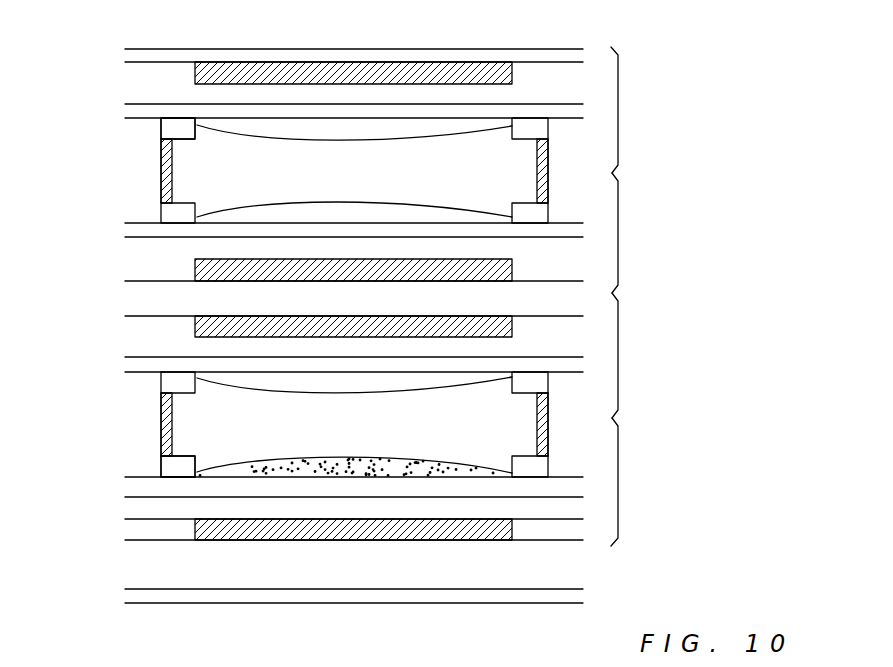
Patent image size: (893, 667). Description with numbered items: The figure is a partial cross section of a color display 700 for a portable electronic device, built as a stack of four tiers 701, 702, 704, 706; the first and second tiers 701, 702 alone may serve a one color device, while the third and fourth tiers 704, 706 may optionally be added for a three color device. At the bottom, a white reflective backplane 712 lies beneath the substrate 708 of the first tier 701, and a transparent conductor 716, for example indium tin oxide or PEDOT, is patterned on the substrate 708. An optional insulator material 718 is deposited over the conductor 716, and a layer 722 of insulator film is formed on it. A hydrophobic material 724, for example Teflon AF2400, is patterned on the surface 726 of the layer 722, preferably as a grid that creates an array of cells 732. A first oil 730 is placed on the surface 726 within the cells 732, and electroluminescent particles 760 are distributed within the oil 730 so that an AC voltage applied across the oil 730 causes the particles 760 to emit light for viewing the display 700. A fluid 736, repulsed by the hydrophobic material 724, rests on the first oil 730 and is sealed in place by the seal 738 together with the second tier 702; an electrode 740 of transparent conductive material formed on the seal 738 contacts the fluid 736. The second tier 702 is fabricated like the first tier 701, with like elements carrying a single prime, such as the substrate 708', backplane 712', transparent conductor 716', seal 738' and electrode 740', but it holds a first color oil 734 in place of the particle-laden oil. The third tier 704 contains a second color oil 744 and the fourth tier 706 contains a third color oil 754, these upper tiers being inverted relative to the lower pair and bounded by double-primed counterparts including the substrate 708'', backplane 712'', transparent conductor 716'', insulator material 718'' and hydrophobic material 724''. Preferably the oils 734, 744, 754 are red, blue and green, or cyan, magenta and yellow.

The color display 700 is at (710, 583).
The first tier 701 is at (642, 482).
The second tier 702 is at (643, 355).
The third tier 704 is at (643, 233).
The fourth tier 706 is at (642, 110).
The substrate 708 is at (320, 555).
The substrate of second tier 708' is at (320, 294).
The substrate of third tier 708'' is at (337, 35).
The white reflective backplane 712 is at (320, 476).
The backplane of second tier 712' is at (316, 221).
The backplane of third tier 712'' is at (320, 102).
The transparent conductor 716 is at (327, 428).
The transparent conductor of second tier 716' is at (313, 263).
The transparent conductor of third tier 716'' is at (353, 49).
The insulator material 718 is at (313, 422).
The insulator material of third tier 718'' is at (108, 69).
The insulator film layer 722 is at (142, 485).
The hydrophobic material 724 is at (135, 461).
The hydrophobic material of third tier 724'' is at (126, 127).
The surface 726 is at (555, 477).
The first oil 730 is at (270, 462).
The cells 732 is at (420, 443).
The first color oil 734 is at (295, 385).
The fluid 736 is at (522, 418).
The seal 738 is at (125, 424).
The seal of second tier 738' is at (277, 170).
The electrode 740 is at (127, 415).
The electrode of second tier 740' is at (127, 171).
The second color oil 744 is at (330, 205).
The third color oil 754 is at (285, 128).
The electroluminescent particles 760 is at (390, 462).